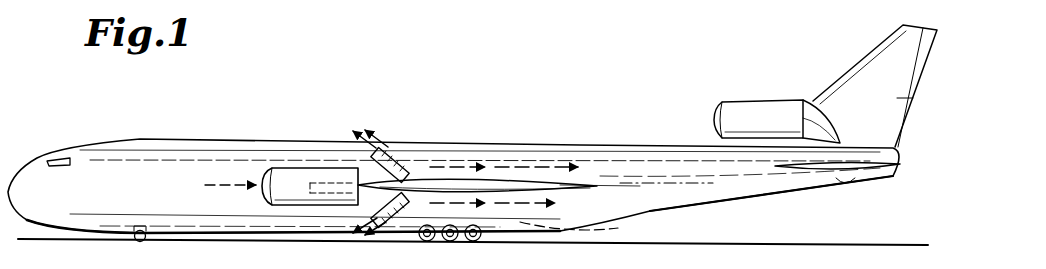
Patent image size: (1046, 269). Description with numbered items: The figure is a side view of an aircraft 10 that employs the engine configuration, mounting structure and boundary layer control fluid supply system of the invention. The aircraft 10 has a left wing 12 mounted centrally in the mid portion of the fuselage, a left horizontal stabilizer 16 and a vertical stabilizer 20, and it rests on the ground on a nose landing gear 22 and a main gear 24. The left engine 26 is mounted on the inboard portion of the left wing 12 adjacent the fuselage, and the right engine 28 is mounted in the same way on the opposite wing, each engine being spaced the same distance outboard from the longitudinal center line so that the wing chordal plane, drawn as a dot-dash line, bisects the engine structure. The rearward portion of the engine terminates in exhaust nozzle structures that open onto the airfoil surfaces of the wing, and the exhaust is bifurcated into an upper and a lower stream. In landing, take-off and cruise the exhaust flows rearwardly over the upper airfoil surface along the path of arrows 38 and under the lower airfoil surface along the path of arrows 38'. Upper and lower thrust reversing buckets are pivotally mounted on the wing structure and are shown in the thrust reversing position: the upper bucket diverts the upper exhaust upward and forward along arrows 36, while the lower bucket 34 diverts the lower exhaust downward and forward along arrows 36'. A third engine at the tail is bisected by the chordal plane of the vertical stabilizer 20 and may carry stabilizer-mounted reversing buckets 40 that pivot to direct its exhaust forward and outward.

The aircraft 10 is at (452, 138).
The left wing 12 is at (651, 211).
The left horizontal stabilizer 16 is at (813, 172).
The vertical stabilizer 20 is at (873, 77).
The nose landing gear 22 is at (142, 240).
The main gear 24 is at (474, 241).
The left engine 26 is at (278, 168).
The right engine 28 is at (747, 101).
The lower thrust reversing bucket 34 is at (400, 222).
The arrows 36 is at (357, 113).
The arrows 36' is at (336, 243).
The arrows 38 is at (504, 138).
The arrows 38' is at (540, 224).
The reversing buckets 40 is at (823, 125).